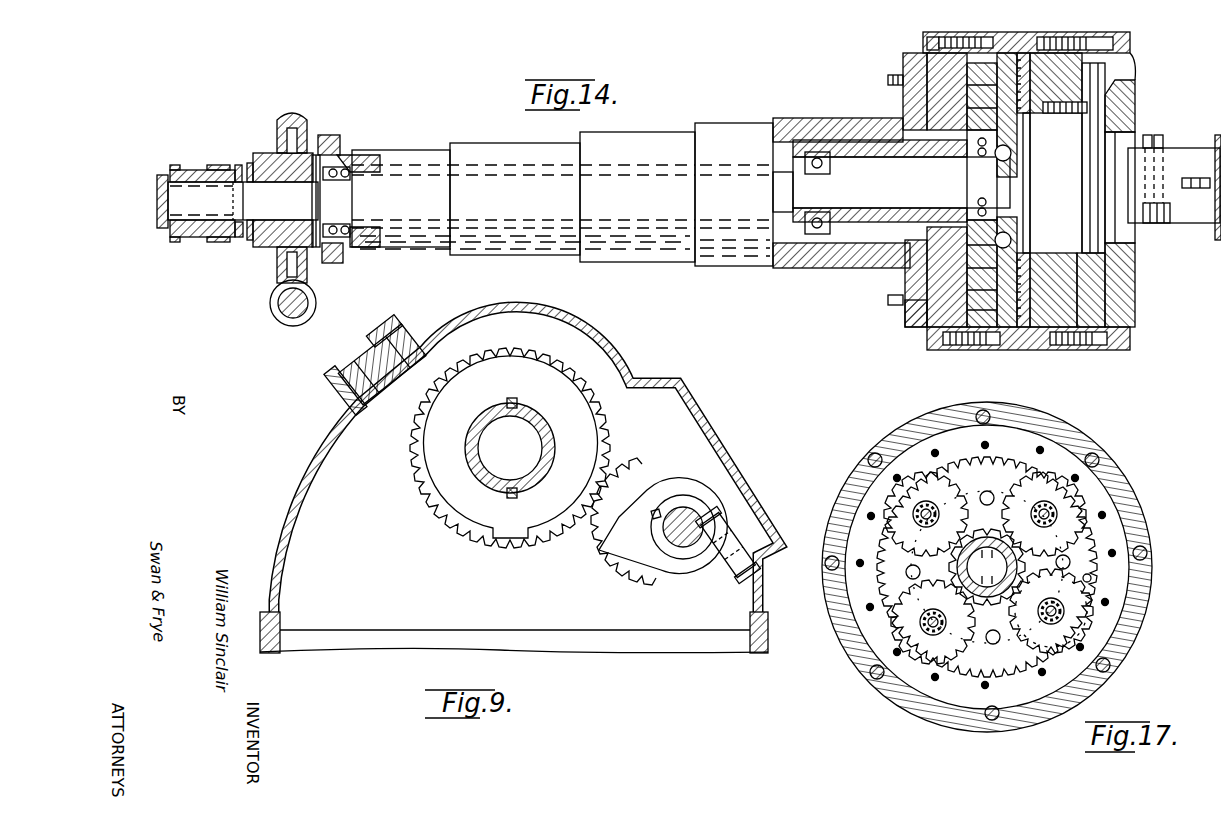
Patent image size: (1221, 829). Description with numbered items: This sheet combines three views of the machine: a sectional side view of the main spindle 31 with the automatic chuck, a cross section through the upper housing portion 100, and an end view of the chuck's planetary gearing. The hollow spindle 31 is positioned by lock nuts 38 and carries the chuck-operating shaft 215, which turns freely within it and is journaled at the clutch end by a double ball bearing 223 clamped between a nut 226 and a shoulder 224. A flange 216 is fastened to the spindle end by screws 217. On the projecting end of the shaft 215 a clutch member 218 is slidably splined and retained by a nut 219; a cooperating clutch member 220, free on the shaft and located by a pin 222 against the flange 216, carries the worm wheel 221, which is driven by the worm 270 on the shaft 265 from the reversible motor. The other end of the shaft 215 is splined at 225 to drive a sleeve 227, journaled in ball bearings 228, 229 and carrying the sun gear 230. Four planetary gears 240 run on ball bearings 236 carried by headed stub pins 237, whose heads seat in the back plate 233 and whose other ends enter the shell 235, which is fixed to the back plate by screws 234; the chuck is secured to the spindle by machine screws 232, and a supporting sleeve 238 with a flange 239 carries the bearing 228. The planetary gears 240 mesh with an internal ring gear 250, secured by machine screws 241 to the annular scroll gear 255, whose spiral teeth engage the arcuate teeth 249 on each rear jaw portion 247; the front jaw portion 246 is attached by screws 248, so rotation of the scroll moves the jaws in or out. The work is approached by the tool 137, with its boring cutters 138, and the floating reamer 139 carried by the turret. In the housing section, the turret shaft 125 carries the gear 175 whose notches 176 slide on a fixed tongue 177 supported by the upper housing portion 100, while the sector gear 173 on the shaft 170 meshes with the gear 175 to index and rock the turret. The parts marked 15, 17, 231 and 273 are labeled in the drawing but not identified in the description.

In FIG. 17, the housing ring 15 is at (1106, 454).
In FIG. 14, the gear housing 17 is at (985, 32).
In FIG. 14, the main spindle 31 is at (736, 130).
In FIG. 14, the lock nuts 38 is at (330, 135).
In FIG. 9, the upper portion of housing 100 is at (575, 322).
In FIG. 9, the turret shaft 125 is at (493, 487).
In FIG. 14, the tool 137 is at (1180, 160).
In FIG. 14, the boring cutters 138 is at (1158, 135).
In FIG. 14, the reamer 139 is at (1196, 190).
In FIG. 9, the shaft 170 is at (697, 517).
In FIG. 9, the sector gear 173 is at (655, 480).
In FIG. 9, the gear 175 is at (540, 380).
In FIG. 9, the notches 176 is at (603, 413).
In FIG. 9, the fixed tongue 177 is at (395, 413).
In FIG. 14, the chuck-operating shaft 215 is at (270, 245).
In FIG. 14, the flange 216 is at (318, 247).
In FIG. 14, the screws 217 is at (352, 155).
In FIG. 14, the clutch member 218 is at (210, 170).
In FIG. 14, the nut 219 is at (163, 173).
In FIG. 14, the clutch member 220 is at (237, 240).
In FIG. 14, the worm wheel 221 is at (294, 116).
In FIG. 14, the pin 222 is at (249, 163).
In FIG. 14, the double ball bearing 223 is at (365, 247).
In FIG. 14, the shoulder 224 is at (356, 196).
In FIG. 14, the splined end 225 is at (870, 178).
In FIG. 17, the splined end 225 is at (1012, 567).
In FIG. 14, the nut 226 is at (318, 190).
In FIG. 14, the sleeve 227 is at (945, 160).
In FIG. 17, the sleeve 227 is at (973, 535).
In FIG. 14, the ball bearing 228 is at (845, 130).
In FIG. 14, the ball bearing 229 is at (1010, 154).
In FIG. 14, the sun gear 230 is at (982, 165).
In FIG. 17, the sun gear 230 is at (1002, 618).
In FIG. 14, the housing wall 231 is at (903, 70).
In FIG. 14, the machine screws 232 is at (895, 86).
In FIG. 14, the back plate 233 is at (907, 316).
In FIG. 14, the screws 234 is at (925, 43).
In FIG. 14, the shell 235 is at (1030, 240).
In FIG. 14, the ball bearings 236 is at (1017, 175).
In FIG. 17, the ball bearings 236 is at (1066, 497).
In FIG. 14, the stub shafts 237 is at (1010, 148).
In FIG. 17, the stub shafts 237 is at (1057, 513).
In FIG. 14, the supporting sleeve 238 is at (862, 250).
In FIG. 14, the flange 239 is at (905, 290).
In FIG. 14, the planetary gears 240 is at (890, 80).
In FIG. 17, the planetary gears 240 is at (1084, 533).
In FIG. 14, the machine screws 241 is at (957, 37).
In FIG. 17, the machine screws 241 is at (1083, 649).
In FIG. 14, the front jaw portion 246 is at (1135, 300).
In FIG. 14, the rear jaw portion 247 is at (1103, 350).
In FIG. 14, the machine screws 248 is at (1108, 338).
In FIG. 14, the arcuate teeth 249 is at (1120, 286).
In FIG. 14, the internal ring gear 250 is at (1000, 40).
In FIG. 17, the internal ring gear 250 is at (1091, 580).
In FIG. 14, the scroll gear 255 is at (1084, 252).
In FIG. 14, the shaft 265 is at (308, 300).
In FIG. 14, the worm 270 is at (312, 313).
In FIG. 14, the flange 273 is at (183, 165).